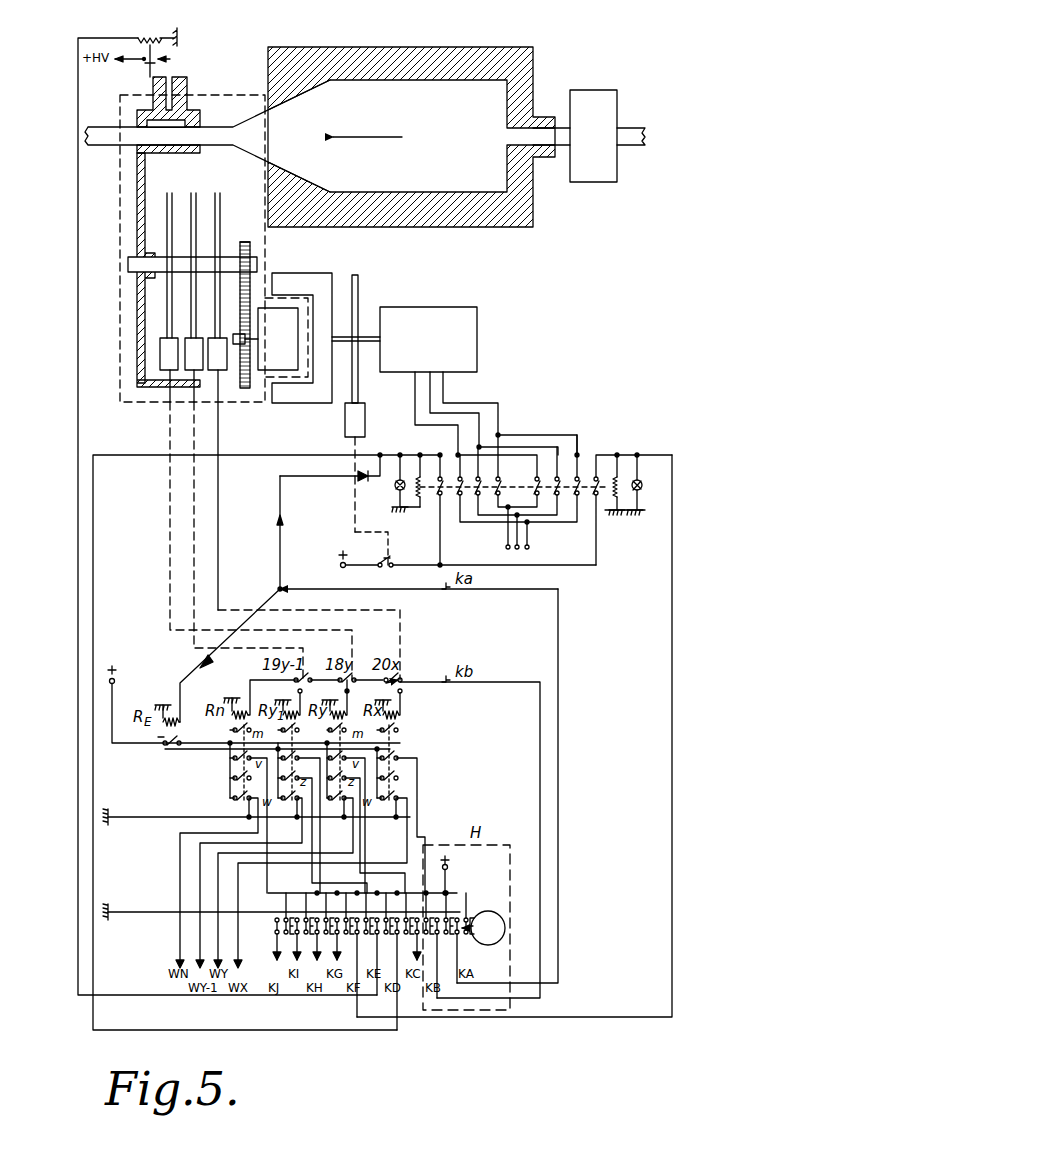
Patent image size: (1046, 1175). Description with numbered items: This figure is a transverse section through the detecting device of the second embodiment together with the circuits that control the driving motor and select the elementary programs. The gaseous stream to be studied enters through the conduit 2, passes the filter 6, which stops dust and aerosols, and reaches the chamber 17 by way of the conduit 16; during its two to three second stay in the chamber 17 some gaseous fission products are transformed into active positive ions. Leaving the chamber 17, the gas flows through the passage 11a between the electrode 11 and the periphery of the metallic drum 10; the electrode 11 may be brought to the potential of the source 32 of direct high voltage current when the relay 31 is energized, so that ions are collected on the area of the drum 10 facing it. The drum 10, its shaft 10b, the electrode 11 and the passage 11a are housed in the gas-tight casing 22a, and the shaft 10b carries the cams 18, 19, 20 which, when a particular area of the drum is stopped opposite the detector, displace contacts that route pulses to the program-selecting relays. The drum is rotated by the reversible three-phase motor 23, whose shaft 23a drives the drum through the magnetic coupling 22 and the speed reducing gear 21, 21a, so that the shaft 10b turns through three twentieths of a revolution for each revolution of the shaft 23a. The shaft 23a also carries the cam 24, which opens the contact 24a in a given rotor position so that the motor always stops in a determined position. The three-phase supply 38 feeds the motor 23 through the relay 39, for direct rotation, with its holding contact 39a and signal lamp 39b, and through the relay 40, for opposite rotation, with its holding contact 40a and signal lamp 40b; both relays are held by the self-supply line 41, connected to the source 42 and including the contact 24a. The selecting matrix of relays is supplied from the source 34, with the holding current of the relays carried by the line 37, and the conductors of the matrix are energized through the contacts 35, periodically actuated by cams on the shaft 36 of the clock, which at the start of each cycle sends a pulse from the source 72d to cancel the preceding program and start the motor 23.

The relay 31 is at (157, 31).
The source of direct high voltage current 32 is at (141, 63).
The electrode 11 is at (186, 117).
The passage 11a is at (172, 145).
The drum 10 is at (186, 148).
The shaft of drum 10b is at (229, 257).
The cam 18 is at (168, 338).
The cam 19 is at (193, 338).
The cam 20 is at (218, 338).
The speed reducing gear 21 is at (242, 336).
The speed reducing gear 21a is at (252, 246).
The gas-tight casing 22a is at (120, 212).
The magnetic coupling 22 is at (282, 365).
The shaft of motor 23a is at (368, 335).
The reversible three-phase motor 23 is at (478, 382).
The cam 24 is at (365, 425).
The contact 24a is at (372, 549).
The chamber 17 is at (454, 145).
The conduit 16 is at (544, 135).
The filter 6 is at (596, 143).
The conduit 2 is at (631, 137).
The relay 39 is at (423, 498).
The holding contact 39a is at (446, 495).
The signal lamp 39b is at (393, 482).
The three-phase supply 38 is at (517, 535).
The relay 40 is at (615, 498).
The holding contact 40a is at (588, 455).
The signal lamp 40b is at (648, 477).
The self-supply line 41 is at (494, 555).
The source 42 is at (347, 562).
The source 34 is at (254, 707).
The line 37 is at (183, 735).
The contacts 35 is at (275, 920).
The shaft 36 is at (495, 937).
The source 72d is at (461, 875).